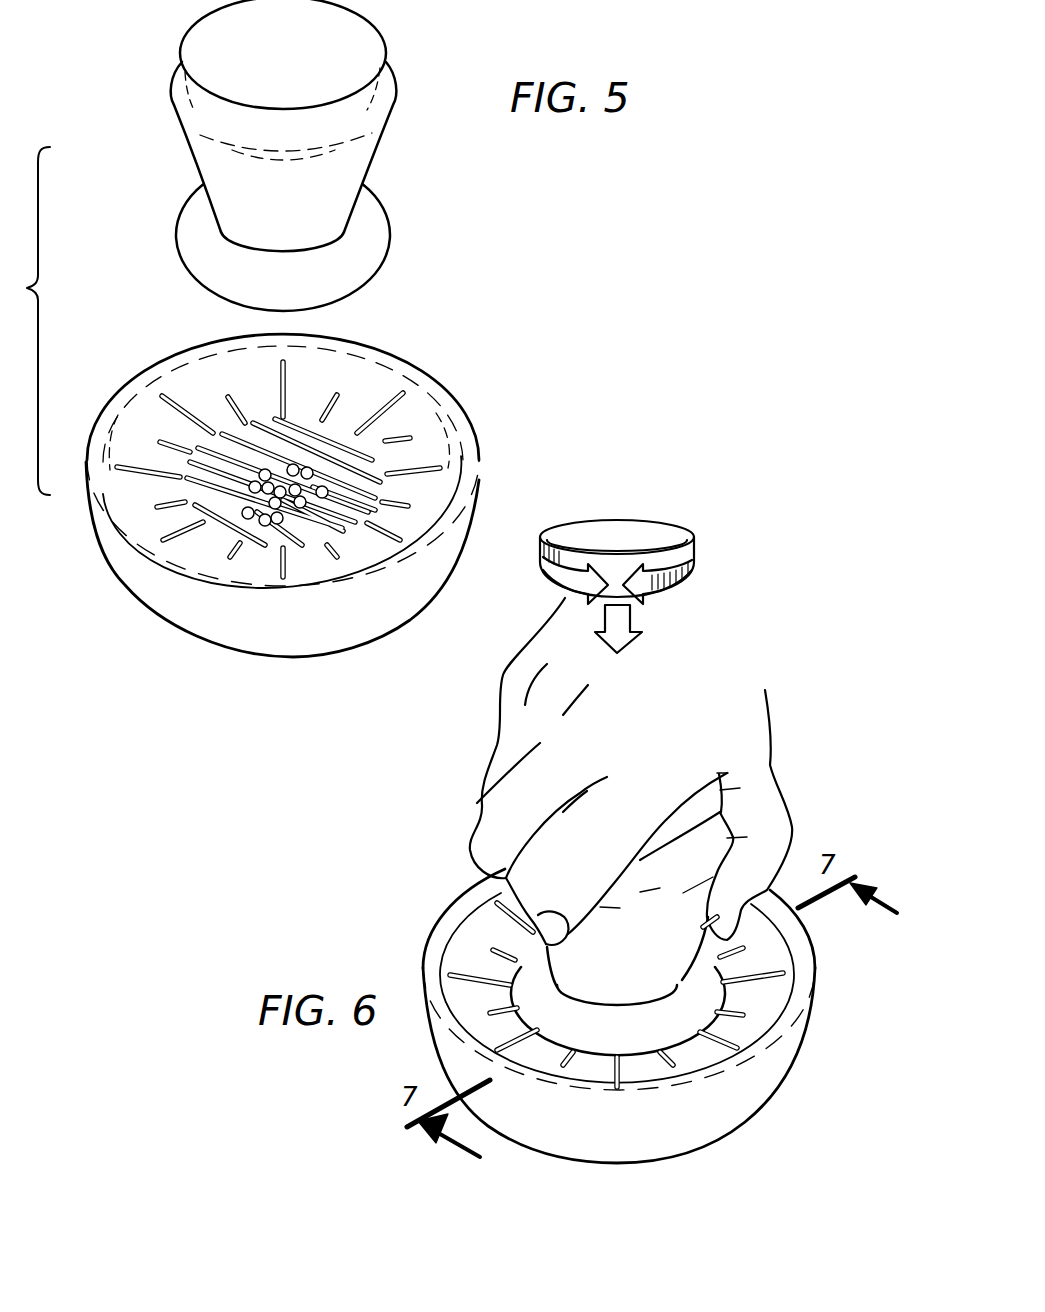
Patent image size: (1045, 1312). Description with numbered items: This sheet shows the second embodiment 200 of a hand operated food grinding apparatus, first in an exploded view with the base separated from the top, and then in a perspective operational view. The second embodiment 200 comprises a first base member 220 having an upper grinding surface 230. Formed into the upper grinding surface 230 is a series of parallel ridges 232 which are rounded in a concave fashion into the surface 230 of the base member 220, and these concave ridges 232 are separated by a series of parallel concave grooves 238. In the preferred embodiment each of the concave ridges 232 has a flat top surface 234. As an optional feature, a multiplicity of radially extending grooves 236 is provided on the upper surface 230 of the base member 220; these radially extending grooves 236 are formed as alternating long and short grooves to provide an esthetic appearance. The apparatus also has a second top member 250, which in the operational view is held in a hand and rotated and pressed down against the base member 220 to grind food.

The second embodiment 200 is at (466, 267).
The first base member 220 is at (477, 497).
The upper grinding surface 230 is at (438, 457).
The parallel ridges 232 is at (438, 407).
The flat top surface 234 is at (307, 433).
The radially extending grooves 236 is at (368, 487).
The parallel concave grooves 238 is at (342, 440).
The second top member 250 is at (381, 152).